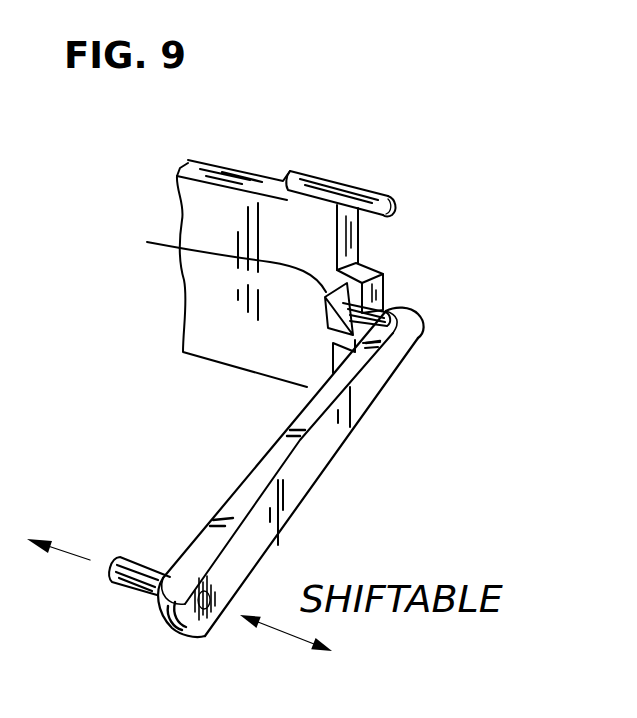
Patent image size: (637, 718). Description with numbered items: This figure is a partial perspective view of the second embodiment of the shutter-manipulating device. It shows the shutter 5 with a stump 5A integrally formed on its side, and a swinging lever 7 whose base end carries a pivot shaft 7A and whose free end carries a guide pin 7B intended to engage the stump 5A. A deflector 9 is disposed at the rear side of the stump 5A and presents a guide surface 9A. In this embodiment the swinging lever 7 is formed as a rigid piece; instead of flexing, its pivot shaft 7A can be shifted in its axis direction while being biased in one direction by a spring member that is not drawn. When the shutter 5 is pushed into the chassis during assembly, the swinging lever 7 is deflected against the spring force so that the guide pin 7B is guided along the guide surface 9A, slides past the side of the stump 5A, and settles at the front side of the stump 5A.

The shutter 5 is at (197, 303).
The stump 5A is at (381, 270).
The swinging lever 7 is at (313, 460).
The pivot shaft 7A is at (120, 585).
The guide pin 7B is at (386, 300).
The deflector 9 is at (327, 313).
The guide surface 9A is at (211, 255).